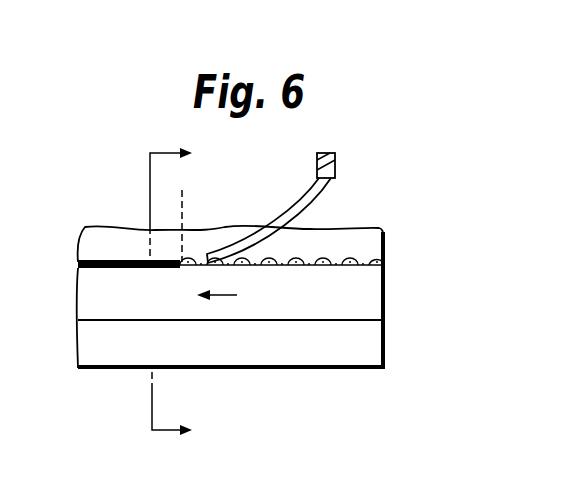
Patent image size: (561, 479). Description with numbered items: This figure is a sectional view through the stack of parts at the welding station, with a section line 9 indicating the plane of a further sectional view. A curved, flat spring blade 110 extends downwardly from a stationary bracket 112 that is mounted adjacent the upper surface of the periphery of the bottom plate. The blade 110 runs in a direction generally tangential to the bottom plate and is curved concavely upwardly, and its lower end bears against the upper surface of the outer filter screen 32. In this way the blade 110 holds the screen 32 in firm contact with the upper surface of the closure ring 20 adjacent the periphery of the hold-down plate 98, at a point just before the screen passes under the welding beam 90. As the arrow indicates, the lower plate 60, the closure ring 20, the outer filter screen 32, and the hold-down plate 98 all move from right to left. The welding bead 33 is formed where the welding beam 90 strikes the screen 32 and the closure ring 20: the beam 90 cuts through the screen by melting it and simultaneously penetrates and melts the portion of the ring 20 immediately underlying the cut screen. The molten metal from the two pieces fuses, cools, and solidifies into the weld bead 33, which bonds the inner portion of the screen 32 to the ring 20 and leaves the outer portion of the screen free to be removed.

The section line 9- 9 is at (179, 295).
The closure ring 20 is at (365, 293).
The outer filter screen 32 is at (383, 265).
The welding bead 33 is at (120, 258).
The lower plate 60 is at (357, 357).
The welding beam 90 is at (183, 203).
The hold-down plate 98 is at (375, 247).
The curved, flat spring blade 110 is at (300, 208).
The stationary bracket 112 is at (336, 160).